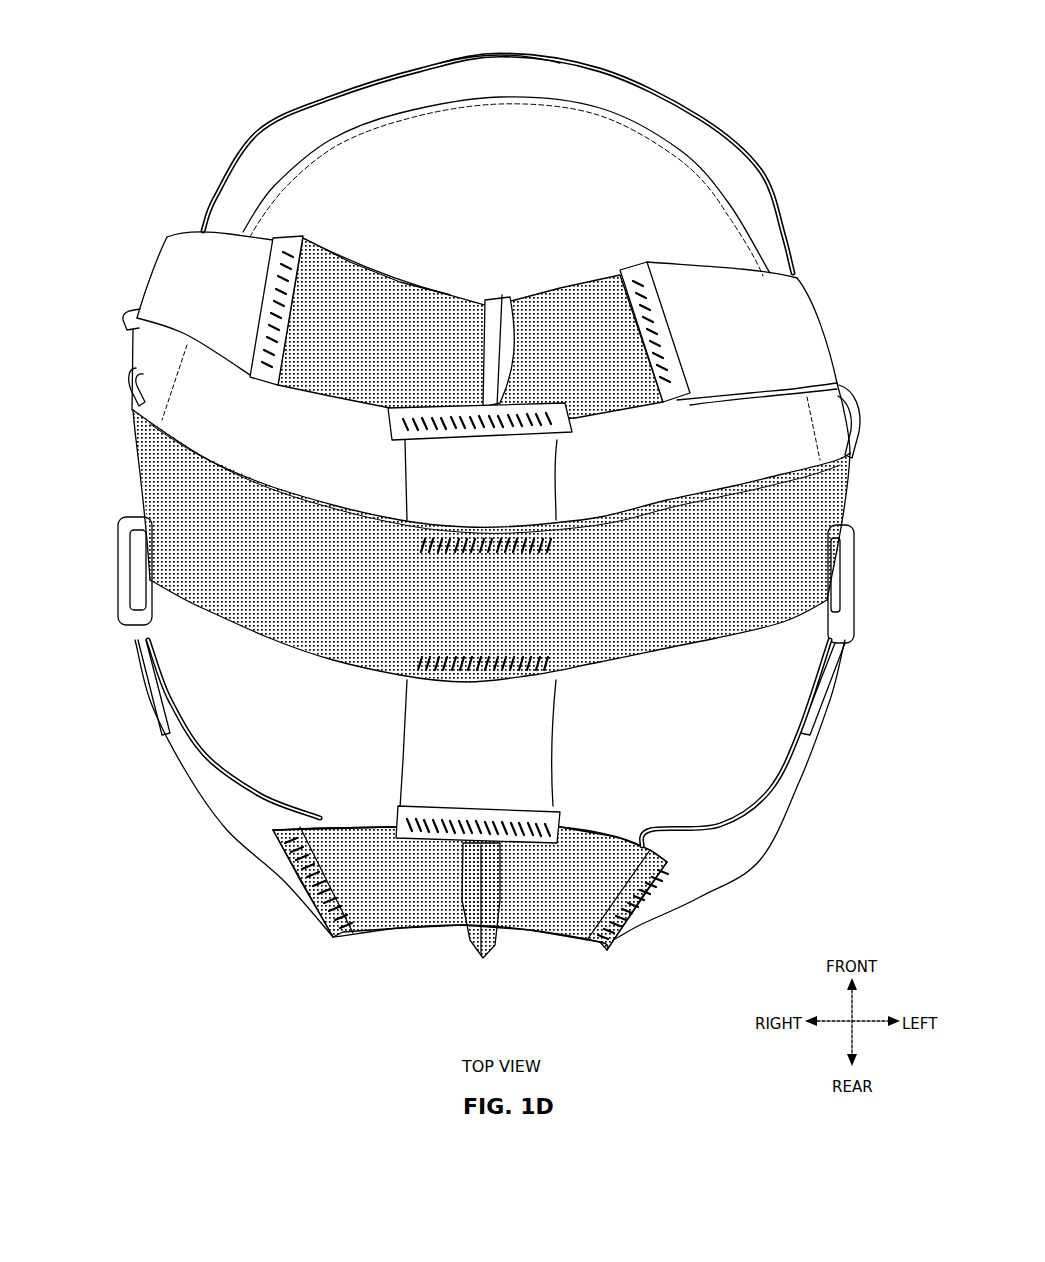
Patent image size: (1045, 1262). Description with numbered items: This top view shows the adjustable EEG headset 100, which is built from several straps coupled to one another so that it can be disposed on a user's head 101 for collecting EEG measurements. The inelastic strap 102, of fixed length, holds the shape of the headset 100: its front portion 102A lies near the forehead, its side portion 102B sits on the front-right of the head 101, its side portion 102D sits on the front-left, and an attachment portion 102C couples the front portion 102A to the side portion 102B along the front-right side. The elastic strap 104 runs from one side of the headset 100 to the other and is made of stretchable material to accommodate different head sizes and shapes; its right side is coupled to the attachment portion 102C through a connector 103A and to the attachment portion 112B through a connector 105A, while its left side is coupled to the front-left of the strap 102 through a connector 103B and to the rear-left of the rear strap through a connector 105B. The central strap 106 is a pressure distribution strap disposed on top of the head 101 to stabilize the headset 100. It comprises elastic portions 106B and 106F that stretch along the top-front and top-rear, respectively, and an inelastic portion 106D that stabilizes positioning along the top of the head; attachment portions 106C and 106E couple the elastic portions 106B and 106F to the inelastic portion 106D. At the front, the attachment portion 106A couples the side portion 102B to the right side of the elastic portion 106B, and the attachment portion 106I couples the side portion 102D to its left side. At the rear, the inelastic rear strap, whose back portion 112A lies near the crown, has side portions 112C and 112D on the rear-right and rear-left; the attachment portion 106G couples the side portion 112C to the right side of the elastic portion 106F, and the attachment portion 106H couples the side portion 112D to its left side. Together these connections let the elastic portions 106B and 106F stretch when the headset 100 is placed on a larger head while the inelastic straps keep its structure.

The adjustable EEG headset 100 is at (190, 55).
The user's head 101 is at (282, 192).
The strap 102 is at (378, 82).
The front portion 102A is at (500, 55).
The side portion 102B is at (182, 232).
The attachment portion 102C is at (133, 340).
The side portion 102D is at (812, 290).
The connector 103A is at (128, 385).
The connector 103B is at (863, 413).
The strap 104 is at (643, 503).
The connector 105A is at (118, 565).
The connector 105B is at (852, 578).
The pressure distribution strap 106 is at (520, 297).
The attachment portion 106A is at (303, 242).
The elastic portion 106B is at (420, 282).
The attachment portion 106C is at (452, 406).
The inelastic portion 106D is at (404, 482).
The attachment portion 106E is at (490, 803).
The elastic portion 106F is at (367, 827).
The attachment portion 106G is at (330, 934).
The attachment portion 106H is at (600, 953).
The attachment portion 106I is at (622, 268).
The back portion 112A is at (147, 672).
The attachment portion 112B is at (828, 670).
The side portion 112C is at (227, 830).
The side portion 112D is at (752, 863).